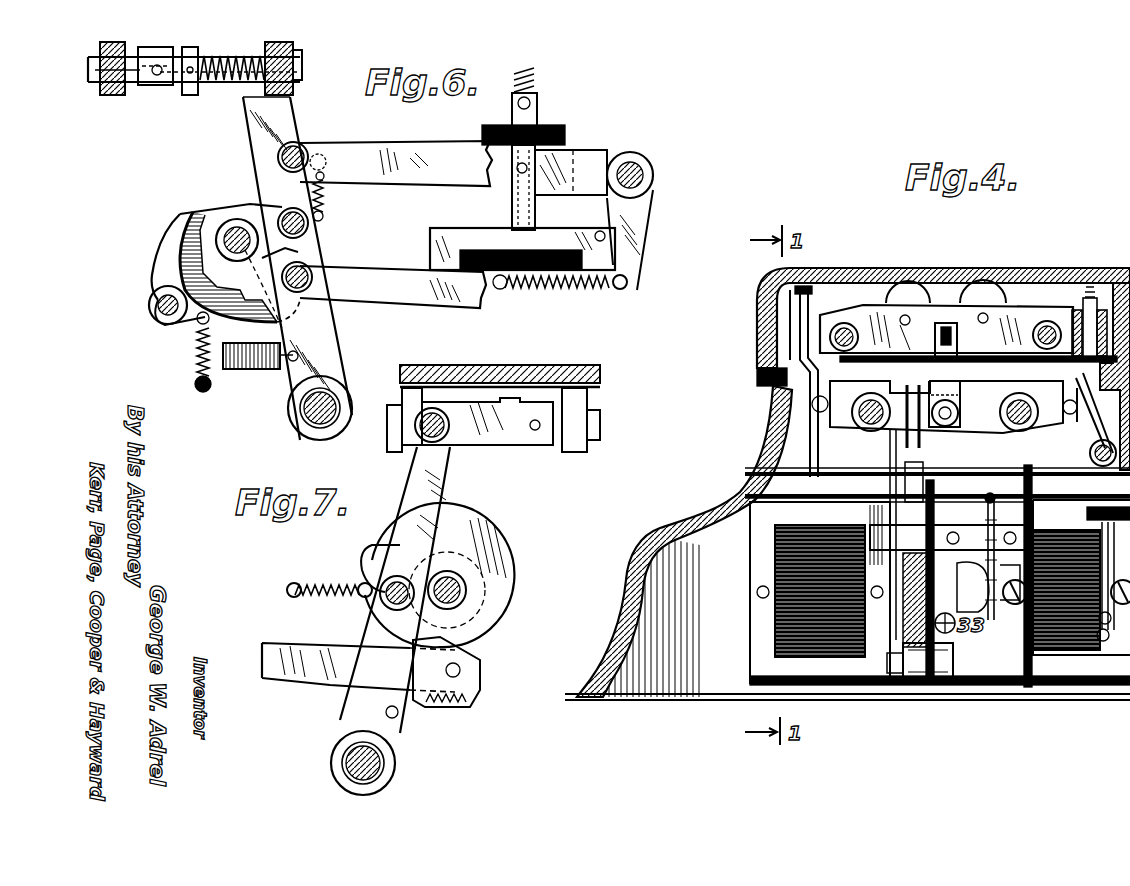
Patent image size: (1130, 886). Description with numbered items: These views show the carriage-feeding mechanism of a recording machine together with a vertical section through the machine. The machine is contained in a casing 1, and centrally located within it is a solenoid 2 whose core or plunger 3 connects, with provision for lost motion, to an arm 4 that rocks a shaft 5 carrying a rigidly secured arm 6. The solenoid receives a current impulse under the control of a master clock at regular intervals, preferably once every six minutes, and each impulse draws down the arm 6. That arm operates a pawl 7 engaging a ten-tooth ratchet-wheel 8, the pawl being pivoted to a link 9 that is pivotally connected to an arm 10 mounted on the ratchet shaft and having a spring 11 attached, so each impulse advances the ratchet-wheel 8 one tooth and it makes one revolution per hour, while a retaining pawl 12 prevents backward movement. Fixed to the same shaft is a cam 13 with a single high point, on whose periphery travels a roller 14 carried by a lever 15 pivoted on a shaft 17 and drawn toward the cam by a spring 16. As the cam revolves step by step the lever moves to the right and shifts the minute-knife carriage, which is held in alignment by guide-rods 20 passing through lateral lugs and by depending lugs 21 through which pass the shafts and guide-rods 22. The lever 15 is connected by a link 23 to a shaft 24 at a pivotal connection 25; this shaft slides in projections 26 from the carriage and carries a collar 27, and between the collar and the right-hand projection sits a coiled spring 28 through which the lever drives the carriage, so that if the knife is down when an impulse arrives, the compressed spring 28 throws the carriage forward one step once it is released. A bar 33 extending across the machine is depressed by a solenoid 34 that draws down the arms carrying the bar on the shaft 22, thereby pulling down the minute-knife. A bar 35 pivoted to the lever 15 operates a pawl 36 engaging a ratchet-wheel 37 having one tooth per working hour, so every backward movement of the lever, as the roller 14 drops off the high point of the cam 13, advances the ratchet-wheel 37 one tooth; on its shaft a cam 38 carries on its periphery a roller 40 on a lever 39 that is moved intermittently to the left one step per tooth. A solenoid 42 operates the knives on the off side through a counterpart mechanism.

In FIG. 4, the casing 1 is at (713, 500).
In FIG. 6, the solenoid 2 is at (487, 278).
In FIG. 4, the solenoid 2 is at (897, 632).
In FIG. 6, the core or plunger 3 is at (513, 210).
In FIG. 4, the core or plunger 3 is at (933, 495).
In FIG. 6, the arm 4 is at (560, 163).
In FIG. 6, the shaft 5 is at (645, 170).
In FIG. 6, the arm 6 is at (405, 172).
In FIG. 6, the pawl 7 is at (333, 210).
In FIG. 6, the ratchet-wheel 8 is at (213, 208).
In FIG. 4, the ratchet-wheel 8 is at (948, 524).
In FIG. 6, the link 9 is at (277, 178).
In FIG. 6, the arm 10 is at (183, 213).
In FIG. 6, the spring 11 is at (313, 178).
In FIG. 6, the retaining pawl 12 is at (165, 257).
In FIG. 6, the cam 13 is at (281, 325).
In FIG. 6, the roller 14 is at (313, 250).
In FIG. 6, the lever 15 is at (330, 334).
In FIG. 6, the spring 16 is at (241, 370).
In FIG. 6, the shaft 17 is at (337, 421).
In FIG. 7, the shaft 17 is at (363, 763).
In FIG. 4, the guide-rods 20 is at (848, 332).
In FIG. 4, the depending lugs 21 is at (1003, 386).
In FIG. 4, the shafts and guide-rods 22 is at (872, 403).
In FIG. 6, the link 23 is at (165, 88).
In FIG. 6, the shaft 24 is at (133, 83).
In FIG. 6, the pivotal connection 25 is at (178, 88).
In FIG. 6, the projections 26 is at (113, 93).
In FIG. 6, the collar 27 is at (193, 90).
In FIG. 6, the coiled spring 28 is at (297, 64).
In FIG. 4, the bar 33 is at (813, 404).
In FIG. 4, the solenoid 34 is at (777, 610).
In FIG. 6, the bar 35 is at (423, 299).
In FIG. 7, the bar 35 is at (327, 673).
In FIG. 7, the pawl 36 is at (462, 660).
In FIG. 7, the ratchet-wheel 37 is at (478, 572).
In FIG. 4, the ratchet-wheel 37 is at (985, 500).
In FIG. 7, the cam 38 is at (483, 518).
In FIG. 7, the lever 39 is at (443, 474).
In FIG. 7, the roller 40 is at (387, 600).
In FIG. 4, the solenoid 42 is at (1060, 630).